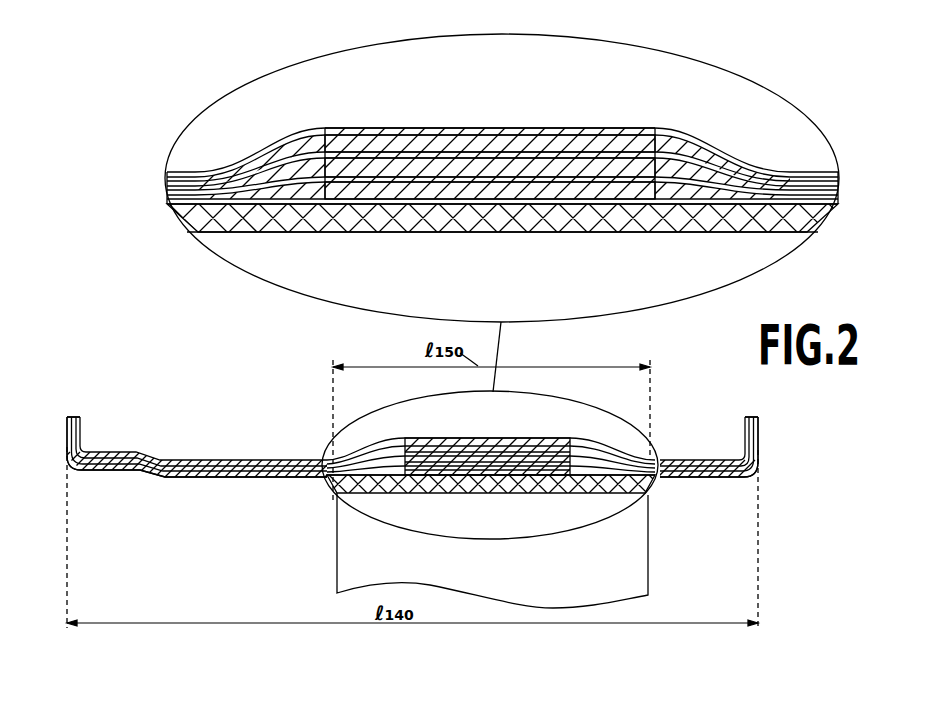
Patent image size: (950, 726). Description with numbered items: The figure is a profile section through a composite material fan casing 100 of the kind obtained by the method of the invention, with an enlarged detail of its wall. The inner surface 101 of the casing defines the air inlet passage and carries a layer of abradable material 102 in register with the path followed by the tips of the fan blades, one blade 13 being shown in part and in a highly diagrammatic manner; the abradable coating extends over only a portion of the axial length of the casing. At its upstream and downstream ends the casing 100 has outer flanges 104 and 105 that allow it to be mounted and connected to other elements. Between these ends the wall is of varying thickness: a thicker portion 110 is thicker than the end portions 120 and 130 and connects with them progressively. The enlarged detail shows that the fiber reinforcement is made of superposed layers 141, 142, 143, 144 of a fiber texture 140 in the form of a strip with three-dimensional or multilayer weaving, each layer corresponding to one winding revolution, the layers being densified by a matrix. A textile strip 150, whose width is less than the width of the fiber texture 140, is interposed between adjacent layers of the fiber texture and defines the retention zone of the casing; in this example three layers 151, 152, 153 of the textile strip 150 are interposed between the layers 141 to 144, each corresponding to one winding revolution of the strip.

The fan blade 13 is at (636, 550).
The composite material fan casing 100 is at (157, 496).
The inner surface 101 is at (186, 213).
The layer of abradable material 102 is at (681, 232).
The outer flange 104 is at (67, 430).
The outer flange 105 is at (761, 432).
The thicker portion 110 is at (686, 118).
The end portion 120 is at (173, 459).
The end portion 130 is at (696, 460).
The fiber texture 140 is at (292, 124).
The layer of fiber texture 141 is at (176, 205).
The layer of fiber texture 142 is at (236, 192).
The layer of fiber texture 143 is at (247, 161).
The layer of fiber texture 144 is at (263, 148).
The textile strip 150 is at (596, 79).
The layer of textile strip 151 is at (577, 190).
The layer of textile strip 152 is at (496, 168).
The layer of textile strip 153 is at (437, 146).